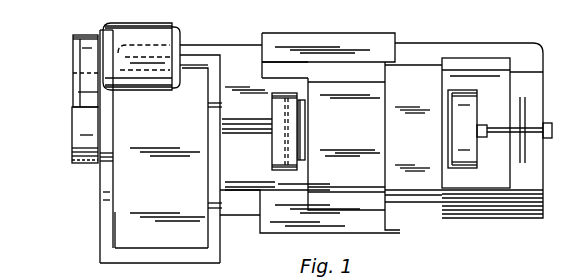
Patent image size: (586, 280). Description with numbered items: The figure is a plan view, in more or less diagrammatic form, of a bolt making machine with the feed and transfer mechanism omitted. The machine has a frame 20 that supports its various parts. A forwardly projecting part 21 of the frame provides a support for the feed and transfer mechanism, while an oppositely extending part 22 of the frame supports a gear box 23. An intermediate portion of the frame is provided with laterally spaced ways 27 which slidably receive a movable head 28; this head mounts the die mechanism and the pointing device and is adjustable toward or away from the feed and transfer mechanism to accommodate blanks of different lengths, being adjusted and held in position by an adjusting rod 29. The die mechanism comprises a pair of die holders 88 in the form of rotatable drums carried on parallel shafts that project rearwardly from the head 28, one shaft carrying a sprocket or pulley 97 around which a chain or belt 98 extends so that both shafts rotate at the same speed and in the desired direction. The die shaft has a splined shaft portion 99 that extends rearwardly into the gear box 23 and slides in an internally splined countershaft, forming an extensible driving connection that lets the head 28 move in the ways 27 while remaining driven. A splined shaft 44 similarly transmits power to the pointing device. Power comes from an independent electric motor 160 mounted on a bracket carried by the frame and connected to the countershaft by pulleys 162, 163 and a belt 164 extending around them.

The electric motor 160 is at (110, 31).
The pulley 162 is at (68, 62).
The belt 164 is at (80, 92).
The pulley 163 is at (72, 118).
The frame part 22 is at (108, 223).
The gear box 23 is at (117, 238).
The frame 20 is at (236, 50).
The splined shaft portion 99 is at (258, 113).
The sprocket or pulley 97 is at (303, 95).
The chain or belt 98 is at (292, 133).
The splined shaft 44 is at (245, 173).
The ways 27 is at (387, 35).
The movable head 28 is at (430, 70).
The forwardly projecting frame part 21 is at (535, 50).
The die holders 88 is at (477, 158).
The adjusting rod 29 is at (490, 127).